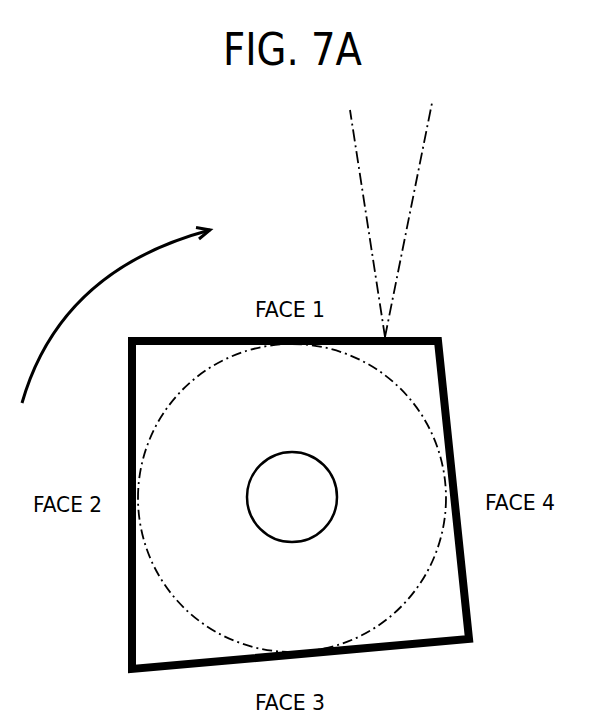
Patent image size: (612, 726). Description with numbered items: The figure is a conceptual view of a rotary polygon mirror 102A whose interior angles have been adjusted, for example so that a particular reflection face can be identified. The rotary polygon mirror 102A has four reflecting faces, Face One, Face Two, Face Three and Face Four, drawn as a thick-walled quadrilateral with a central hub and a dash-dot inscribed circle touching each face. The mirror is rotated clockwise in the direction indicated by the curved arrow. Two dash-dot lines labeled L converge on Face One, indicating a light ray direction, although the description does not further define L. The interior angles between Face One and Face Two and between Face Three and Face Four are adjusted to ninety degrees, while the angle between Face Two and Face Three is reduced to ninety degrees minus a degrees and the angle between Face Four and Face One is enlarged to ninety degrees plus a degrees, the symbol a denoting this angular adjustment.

The rotary polygon mirror 102A is at (450, 417).
The optical axis of light incident on face 1 L is at (397, 220).
The rotation angle of housing a is at (262, 477).